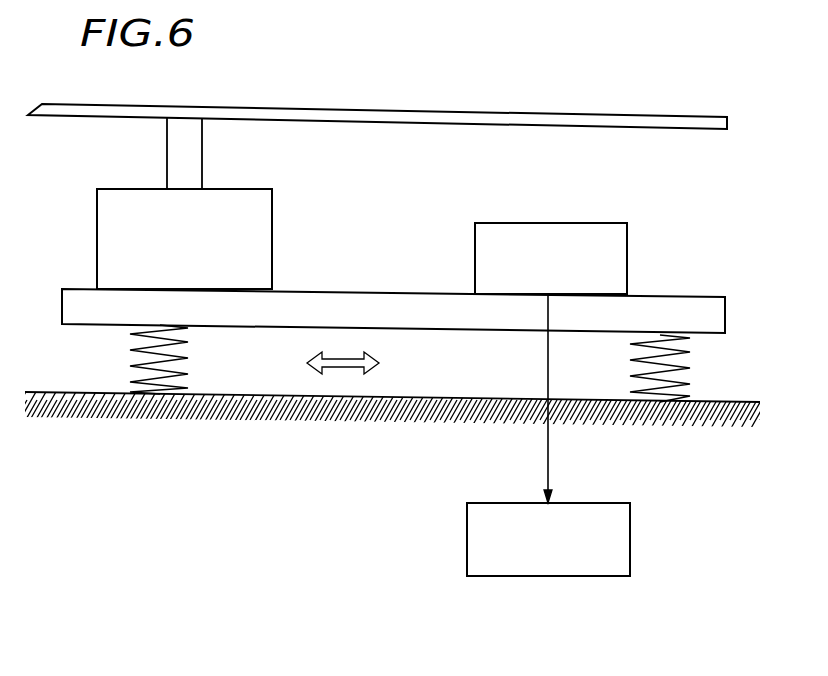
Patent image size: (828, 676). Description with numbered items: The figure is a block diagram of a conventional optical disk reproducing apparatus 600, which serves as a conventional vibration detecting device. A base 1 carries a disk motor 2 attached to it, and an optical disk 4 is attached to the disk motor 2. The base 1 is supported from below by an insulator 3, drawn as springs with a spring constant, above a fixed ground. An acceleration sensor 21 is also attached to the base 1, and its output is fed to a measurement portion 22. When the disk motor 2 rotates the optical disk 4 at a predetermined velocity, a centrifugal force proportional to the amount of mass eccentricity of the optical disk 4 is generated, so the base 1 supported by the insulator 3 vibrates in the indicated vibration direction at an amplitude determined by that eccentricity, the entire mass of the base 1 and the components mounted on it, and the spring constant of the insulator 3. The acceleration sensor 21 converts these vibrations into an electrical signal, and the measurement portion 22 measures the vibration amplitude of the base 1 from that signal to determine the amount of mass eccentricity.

The base 1 is at (68, 289).
The disk motor 2 is at (97, 231).
The insulator 3 is at (135, 372).
The optical disk 4 is at (248, 108).
The acceleration sensor 21 is at (627, 245).
The measurement portion 22 is at (630, 525).
The optical disk reproducing apparatus 600 is at (172, 533).